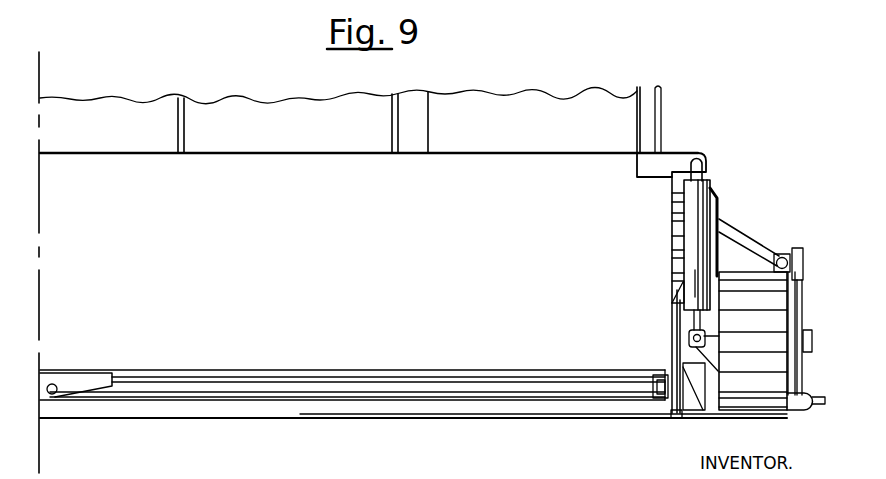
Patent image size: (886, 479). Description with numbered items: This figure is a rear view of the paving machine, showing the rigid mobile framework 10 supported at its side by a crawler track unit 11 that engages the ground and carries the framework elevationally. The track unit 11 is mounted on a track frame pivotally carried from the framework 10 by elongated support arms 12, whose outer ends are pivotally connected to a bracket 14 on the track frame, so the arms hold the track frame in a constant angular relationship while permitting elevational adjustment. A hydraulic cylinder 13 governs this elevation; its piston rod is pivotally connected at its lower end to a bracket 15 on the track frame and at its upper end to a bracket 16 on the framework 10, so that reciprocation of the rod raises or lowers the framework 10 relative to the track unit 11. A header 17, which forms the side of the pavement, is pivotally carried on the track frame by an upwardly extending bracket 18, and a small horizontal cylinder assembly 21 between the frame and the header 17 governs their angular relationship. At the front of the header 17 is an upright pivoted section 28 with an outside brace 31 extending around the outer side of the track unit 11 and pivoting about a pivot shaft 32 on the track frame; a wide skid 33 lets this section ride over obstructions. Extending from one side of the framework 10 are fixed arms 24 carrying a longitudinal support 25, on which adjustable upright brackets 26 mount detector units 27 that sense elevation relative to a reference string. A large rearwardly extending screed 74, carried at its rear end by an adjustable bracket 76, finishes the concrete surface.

The rigid mobile framework 10 is at (125, 80).
The crawler track unit 11 is at (739, 430).
The elongated support arm 12 is at (678, 208).
The hydraulic cylinder 13 is at (690, 239).
The bracket 14 is at (717, 203).
The bracket 15 is at (713, 353).
The bracket 16 is at (686, 152).
The header 17 is at (675, 339).
The upwardly extending bracket 18 is at (675, 296).
The horizontal cylinder assembly 21 is at (690, 346).
The fixed arm 24 is at (763, 252).
The longitudinal support 25 is at (783, 258).
The adjustable upright bracket 26 is at (798, 318).
The detector unit 27 is at (797, 408).
The pivoted section 28 is at (677, 420).
The outside brace 31 is at (811, 329).
The pivot shaft 32 is at (811, 346).
The skid 33 is at (704, 381).
The screed 74 is at (518, 399).
The adjustable bracket 76 is at (647, 392).